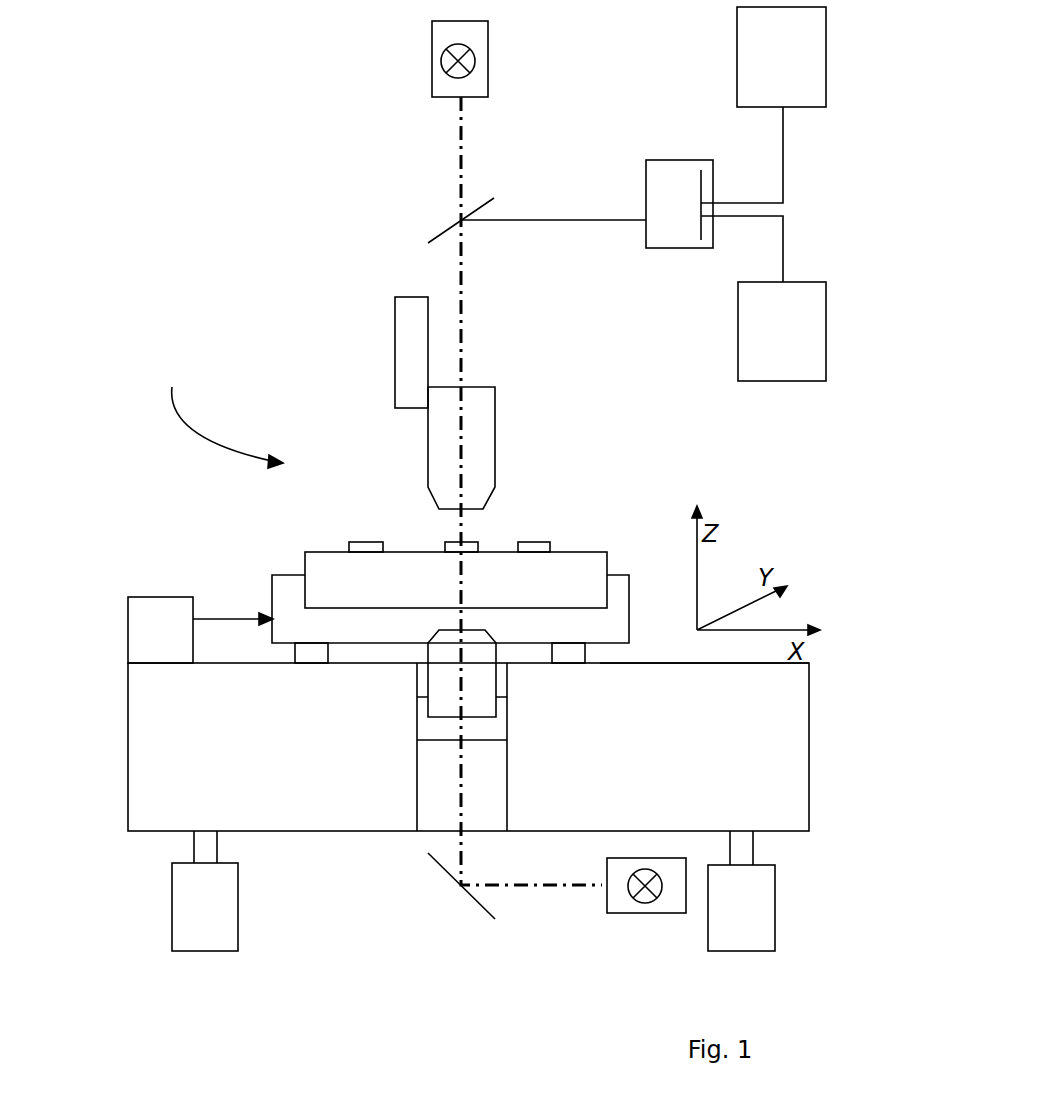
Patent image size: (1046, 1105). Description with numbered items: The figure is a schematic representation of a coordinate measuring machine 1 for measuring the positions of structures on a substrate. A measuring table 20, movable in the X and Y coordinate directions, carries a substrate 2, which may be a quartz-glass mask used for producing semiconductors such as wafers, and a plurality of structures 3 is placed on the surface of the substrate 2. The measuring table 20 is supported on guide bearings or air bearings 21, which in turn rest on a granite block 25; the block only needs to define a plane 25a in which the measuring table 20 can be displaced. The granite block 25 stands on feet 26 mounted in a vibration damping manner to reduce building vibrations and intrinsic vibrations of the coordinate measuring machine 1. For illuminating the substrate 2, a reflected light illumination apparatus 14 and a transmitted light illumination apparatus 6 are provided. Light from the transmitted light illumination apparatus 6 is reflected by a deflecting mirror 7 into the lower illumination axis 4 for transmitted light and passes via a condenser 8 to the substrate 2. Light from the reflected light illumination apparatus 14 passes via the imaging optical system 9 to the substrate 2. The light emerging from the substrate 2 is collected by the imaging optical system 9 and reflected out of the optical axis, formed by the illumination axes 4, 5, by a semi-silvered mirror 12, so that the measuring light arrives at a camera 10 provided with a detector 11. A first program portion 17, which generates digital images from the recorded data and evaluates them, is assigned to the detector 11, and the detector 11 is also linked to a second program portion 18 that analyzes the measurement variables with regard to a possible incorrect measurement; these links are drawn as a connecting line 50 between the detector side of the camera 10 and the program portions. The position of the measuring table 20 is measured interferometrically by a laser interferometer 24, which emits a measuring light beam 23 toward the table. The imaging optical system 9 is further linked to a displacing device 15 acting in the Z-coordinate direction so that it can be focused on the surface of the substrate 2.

The coordinate measuring machine 1 is at (227, 411).
The substrate 2 is at (327, 560).
The structures 3 is at (540, 542).
The lower illumination axis 4 is at (462, 686).
The illumination axis 5 is at (463, 352).
The transmitted light illumination apparatus 6 is at (630, 913).
The deflecting mirror 7 is at (482, 908).
The condenser 8 is at (442, 688).
The imaging optical system 9 is at (440, 443).
The camera 10 is at (686, 236).
The detector 11 is at (700, 187).
The semi-silvered mirror 12 is at (462, 220).
The reflected light illumination apparatus 14 is at (432, 50).
The displacing device 15 is at (407, 342).
The first program portion 17 is at (794, 349).
The second program portion 18 is at (794, 76).
The measuring table 20 is at (618, 618).
The air bearings 21 is at (317, 653).
The measuring light beam 23 is at (243, 617).
The laser interferometer 24 is at (150, 622).
The granite block 25 is at (150, 762).
The plane 25a is at (677, 664).
The feet 26 is at (183, 918).
The signal line 50 is at (525, 220).